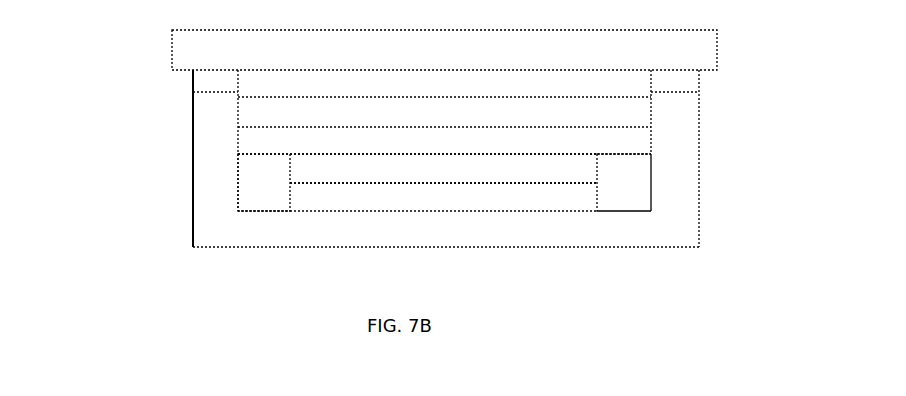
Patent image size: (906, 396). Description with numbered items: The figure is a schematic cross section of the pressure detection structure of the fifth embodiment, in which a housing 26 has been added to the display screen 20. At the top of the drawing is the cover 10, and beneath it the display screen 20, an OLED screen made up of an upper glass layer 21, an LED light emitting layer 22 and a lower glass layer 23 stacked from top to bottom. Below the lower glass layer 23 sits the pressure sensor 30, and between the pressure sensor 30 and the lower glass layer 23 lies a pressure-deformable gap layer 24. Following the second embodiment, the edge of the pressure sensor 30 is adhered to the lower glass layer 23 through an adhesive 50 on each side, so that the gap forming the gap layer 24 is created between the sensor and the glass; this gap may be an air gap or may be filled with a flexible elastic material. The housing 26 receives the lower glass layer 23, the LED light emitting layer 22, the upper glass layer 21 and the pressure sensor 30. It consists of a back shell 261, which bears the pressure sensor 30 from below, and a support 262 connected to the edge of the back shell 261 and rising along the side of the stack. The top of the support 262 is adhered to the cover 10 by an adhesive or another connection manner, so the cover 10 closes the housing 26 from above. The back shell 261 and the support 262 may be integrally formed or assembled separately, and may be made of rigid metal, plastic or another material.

The cover 10 is at (707, 52).
The display screen 20 is at (520, 140).
The upper glass layer 21 is at (640, 82).
The LED light emitting layer 22 is at (640, 114).
The lower glass layer 23 is at (638, 141).
The gap layer 24 is at (479, 168).
The pressure sensor 30 is at (583, 200).
The adhesive 50 is at (260, 169).
The housing 26 is at (389, 172).
The back shell 261 is at (273, 236).
The support 262 is at (207, 208).